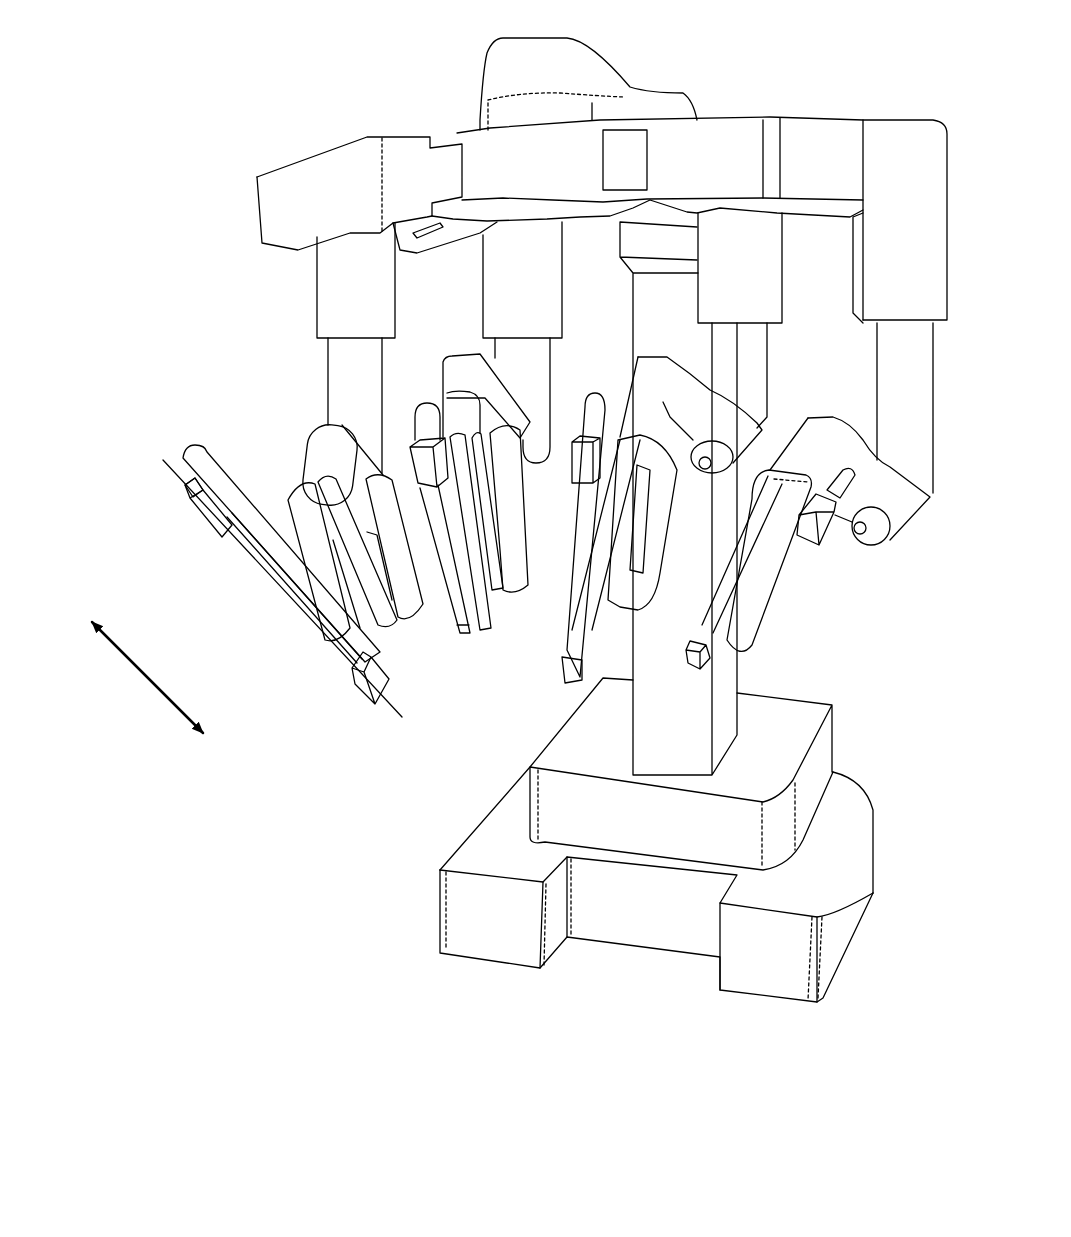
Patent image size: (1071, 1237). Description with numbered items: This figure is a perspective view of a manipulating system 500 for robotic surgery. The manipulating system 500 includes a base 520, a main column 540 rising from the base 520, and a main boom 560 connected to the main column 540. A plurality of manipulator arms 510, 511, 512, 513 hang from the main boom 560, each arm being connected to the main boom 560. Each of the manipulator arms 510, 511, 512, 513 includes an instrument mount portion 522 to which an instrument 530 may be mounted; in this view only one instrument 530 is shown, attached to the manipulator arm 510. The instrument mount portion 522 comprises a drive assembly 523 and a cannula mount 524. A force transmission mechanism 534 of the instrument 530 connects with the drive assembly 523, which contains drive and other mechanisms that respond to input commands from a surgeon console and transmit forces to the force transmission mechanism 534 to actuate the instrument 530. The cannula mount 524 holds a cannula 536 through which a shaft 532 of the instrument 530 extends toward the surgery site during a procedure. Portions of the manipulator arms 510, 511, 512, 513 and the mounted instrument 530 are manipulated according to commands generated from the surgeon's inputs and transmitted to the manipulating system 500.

The manipulating system 500 is at (205, 50).
The main boom 560 is at (648, 97).
The manipulator arm 510 is at (288, 398).
The manipulator arm 511 is at (435, 352).
The manipulator arm 512 is at (616, 375).
The manipulator arm 513 is at (821, 392).
The base 520 is at (792, 707).
The main column 540 is at (643, 740).
The instrument 530 is at (275, 625).
The instrument mount portion 522 is at (269, 522).
The drive assembly 523 is at (215, 520).
The cannula mount 524 is at (370, 693).
The shaft 532 is at (257, 563).
The force transmission mechanism 534 is at (185, 487).
The cannula 536 is at (392, 703).